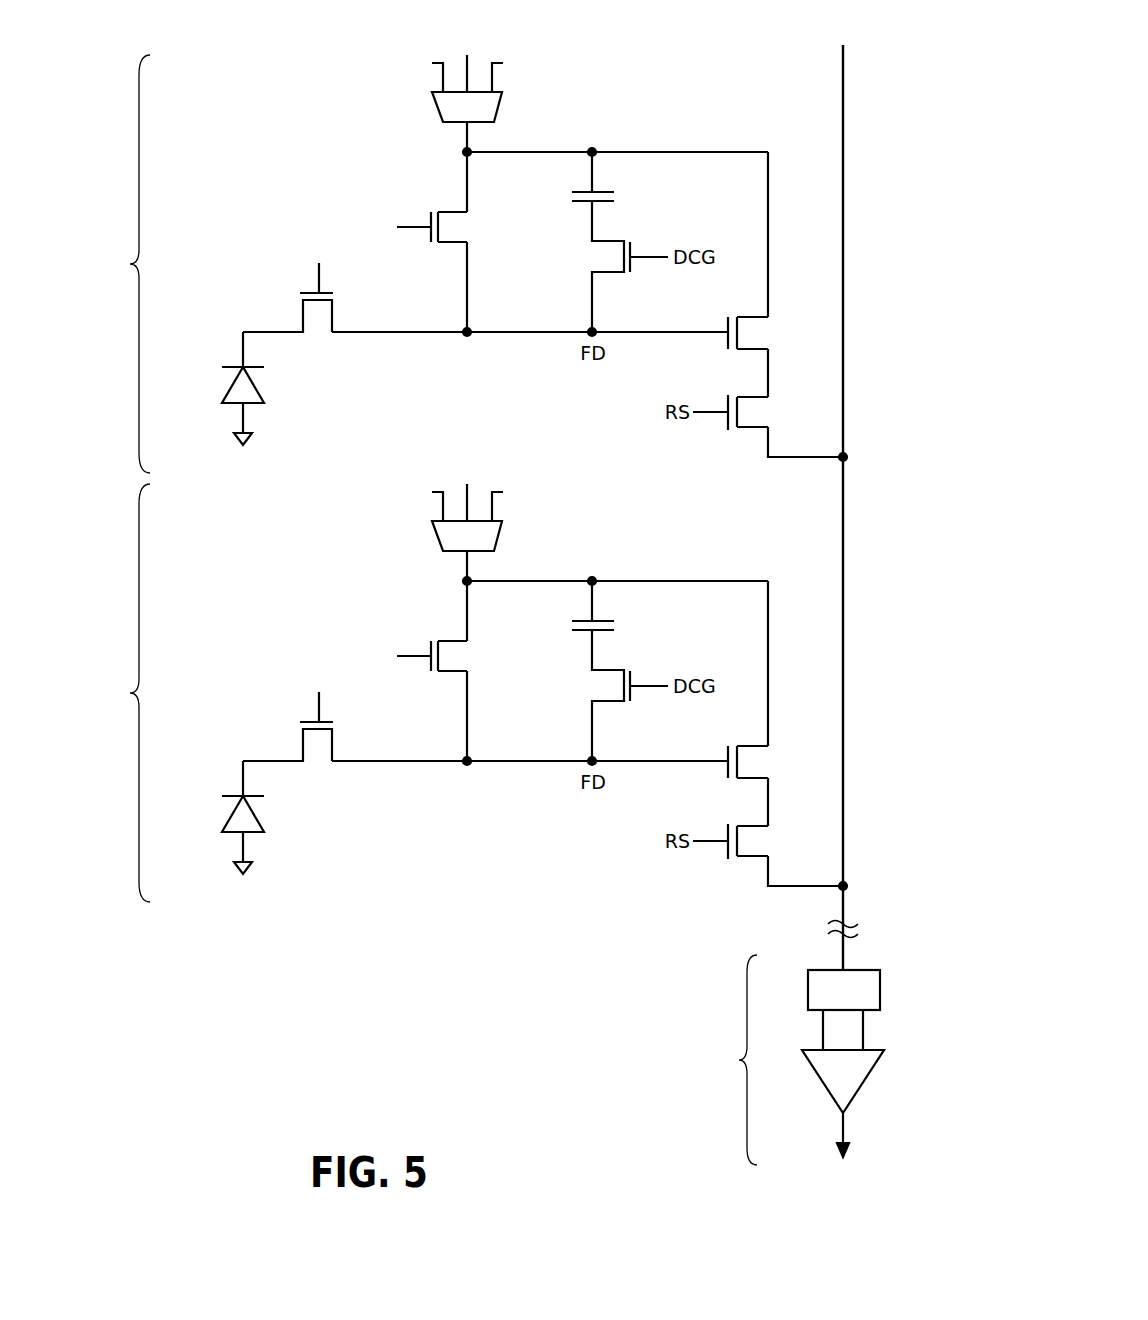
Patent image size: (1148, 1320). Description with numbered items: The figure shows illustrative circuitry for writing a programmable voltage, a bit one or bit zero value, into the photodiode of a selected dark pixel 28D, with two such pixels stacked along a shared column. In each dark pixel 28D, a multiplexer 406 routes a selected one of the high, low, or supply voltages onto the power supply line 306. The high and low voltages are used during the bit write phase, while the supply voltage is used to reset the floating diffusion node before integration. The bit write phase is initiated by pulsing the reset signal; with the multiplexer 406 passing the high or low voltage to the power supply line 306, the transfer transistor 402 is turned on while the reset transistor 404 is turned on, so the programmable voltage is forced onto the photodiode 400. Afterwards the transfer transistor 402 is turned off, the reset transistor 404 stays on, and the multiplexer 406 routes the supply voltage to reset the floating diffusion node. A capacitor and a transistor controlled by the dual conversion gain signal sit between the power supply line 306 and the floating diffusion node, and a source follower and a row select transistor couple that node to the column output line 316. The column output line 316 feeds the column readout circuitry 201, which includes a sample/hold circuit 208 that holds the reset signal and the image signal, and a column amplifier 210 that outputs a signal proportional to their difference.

The dark pixel 28D is at (117, 478).
The photodiode 400 is at (237, 388).
The transfer transistor 402 is at (303, 316).
The reset transistor 404 is at (455, 212).
The multiplexer 406 is at (437, 107).
The power supply line 306 is at (460, 142).
The column output line 316 is at (843, 622).
The column readout circuitry 201 is at (727, 1060).
The sample/hold circuit 208 is at (781, 984).
The column amplifier 210 is at (826, 1090).